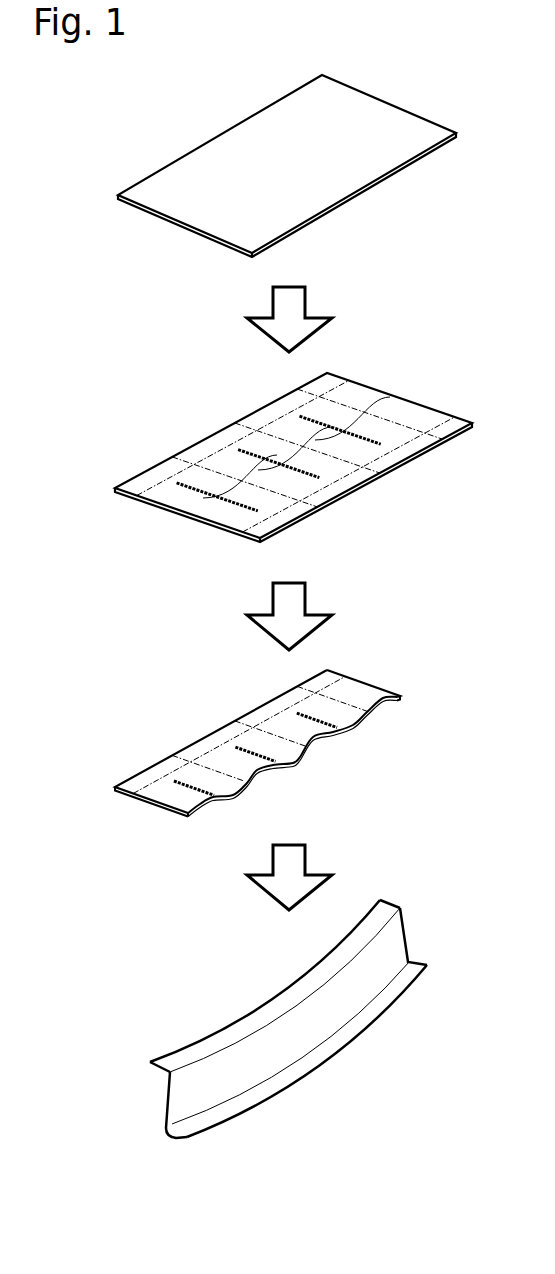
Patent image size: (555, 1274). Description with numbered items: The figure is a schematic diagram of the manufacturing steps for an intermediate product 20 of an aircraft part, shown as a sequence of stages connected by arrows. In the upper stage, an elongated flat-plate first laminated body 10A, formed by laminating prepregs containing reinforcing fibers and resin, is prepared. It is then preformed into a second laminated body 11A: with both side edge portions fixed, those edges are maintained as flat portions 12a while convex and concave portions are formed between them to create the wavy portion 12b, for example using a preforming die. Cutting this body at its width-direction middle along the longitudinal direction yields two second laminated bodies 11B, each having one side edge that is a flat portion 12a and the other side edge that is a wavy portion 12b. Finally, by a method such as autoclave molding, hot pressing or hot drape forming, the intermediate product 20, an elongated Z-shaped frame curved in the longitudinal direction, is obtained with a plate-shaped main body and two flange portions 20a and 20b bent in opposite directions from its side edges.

The first laminated body 10A is at (357, 188).
The second laminated body 11A is at (357, 487).
The second laminated body 11B is at (357, 722).
The flat portion 12a is at (140, 486).
The wavy portion 12b is at (250, 445).
The intermediate product 20 is at (303, 1019).
The flange portion 20a is at (243, 1025).
The flange portion 20b is at (357, 1023).